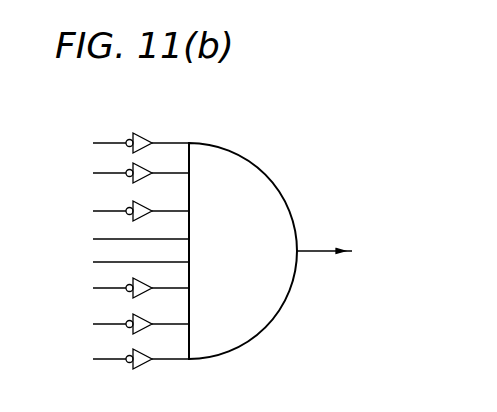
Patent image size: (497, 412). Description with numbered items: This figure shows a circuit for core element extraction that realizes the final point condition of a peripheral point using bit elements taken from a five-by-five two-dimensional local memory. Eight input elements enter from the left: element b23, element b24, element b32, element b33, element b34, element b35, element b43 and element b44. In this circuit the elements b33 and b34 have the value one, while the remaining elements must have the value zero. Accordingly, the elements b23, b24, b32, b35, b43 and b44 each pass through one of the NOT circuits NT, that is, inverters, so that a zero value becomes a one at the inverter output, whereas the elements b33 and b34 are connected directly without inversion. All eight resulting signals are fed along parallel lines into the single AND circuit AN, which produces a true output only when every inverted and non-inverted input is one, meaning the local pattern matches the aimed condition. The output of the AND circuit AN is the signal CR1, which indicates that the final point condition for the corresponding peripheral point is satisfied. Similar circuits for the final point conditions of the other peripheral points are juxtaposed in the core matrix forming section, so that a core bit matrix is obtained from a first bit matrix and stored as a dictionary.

The NOT circuits NT is at (150, 122).
The AND circuit AN is at (254, 136).
The element b23 is at (70, 144).
The element b24 is at (70, 174).
The element b32 is at (70, 212).
The element b33 is at (70, 240).
The element b34 is at (70, 263).
The element b35 is at (70, 289).
The element b43 is at (70, 325).
The element b44 is at (70, 360).
The output signal CR1 is at (347, 254).